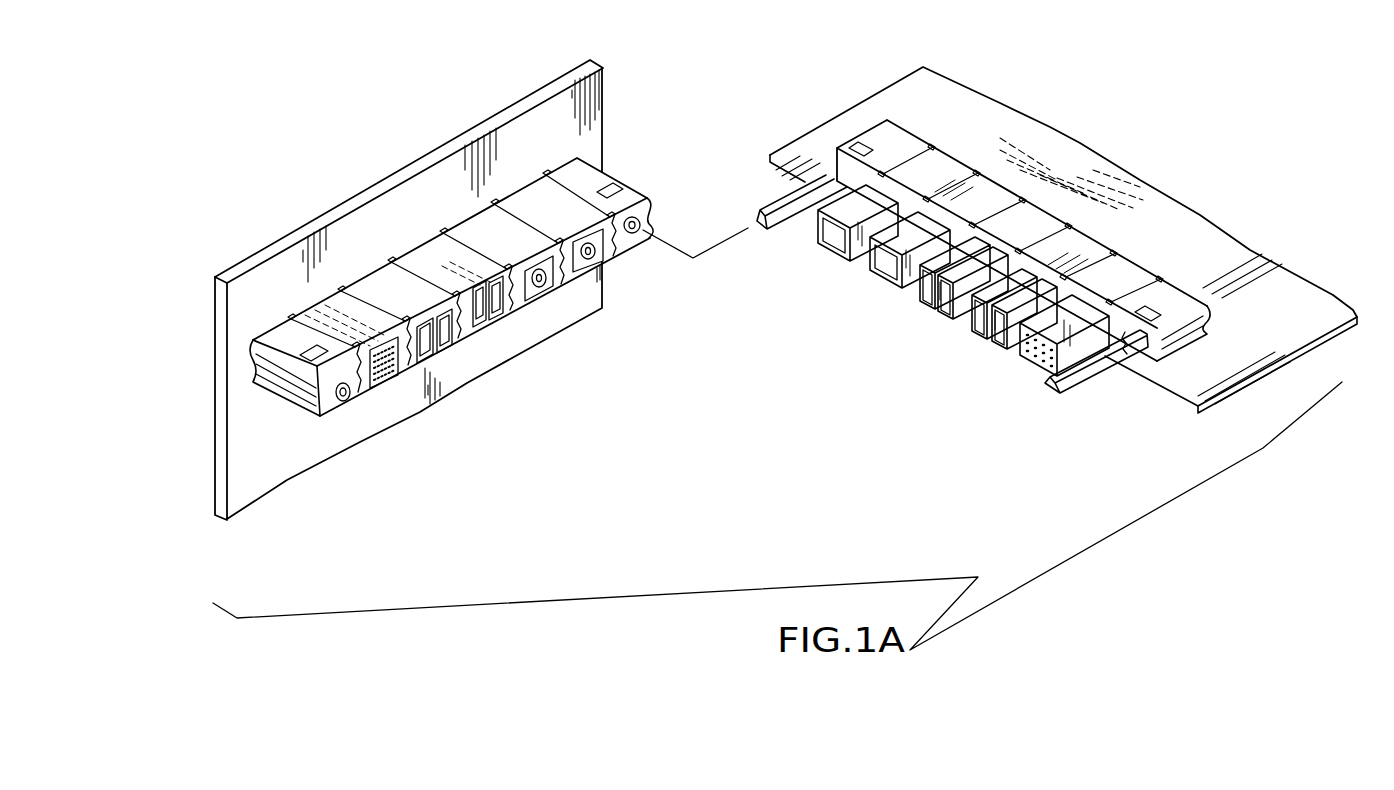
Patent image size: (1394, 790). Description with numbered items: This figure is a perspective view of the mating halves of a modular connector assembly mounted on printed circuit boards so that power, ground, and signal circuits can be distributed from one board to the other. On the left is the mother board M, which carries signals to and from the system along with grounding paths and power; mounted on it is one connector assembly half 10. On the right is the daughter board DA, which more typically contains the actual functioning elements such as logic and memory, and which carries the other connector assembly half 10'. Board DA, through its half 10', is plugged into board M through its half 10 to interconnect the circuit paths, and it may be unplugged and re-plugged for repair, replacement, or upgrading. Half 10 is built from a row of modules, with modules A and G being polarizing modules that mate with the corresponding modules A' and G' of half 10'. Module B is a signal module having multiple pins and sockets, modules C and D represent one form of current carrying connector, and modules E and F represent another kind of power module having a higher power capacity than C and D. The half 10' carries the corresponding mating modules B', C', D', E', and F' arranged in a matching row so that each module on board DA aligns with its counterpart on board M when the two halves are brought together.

The mother board M is at (547, 88).
The connector assembly half 10 is at (450, 311).
The polarizing module A is at (304, 354).
The signal module B is at (353, 329).
The current carrying connector module C is at (401, 303).
The current carrying connector module D is at (448, 273).
The power module E is at (501, 241).
The power module F is at (556, 208).
The polarizing module G is at (619, 182).
The daughter board DA is at (953, 88).
The connector assembly half 10' is at (1074, 240).
The polarizing module A' is at (1193, 322).
The connector assembly module B' is at (1146, 268).
The connector assembly module C' is at (1099, 239).
The connector assembly module D' is at (1070, 187).
The connector assembly module E' is at (1010, 157).
The connector assembly module F' is at (951, 155).
The polarizing module G' is at (886, 120).